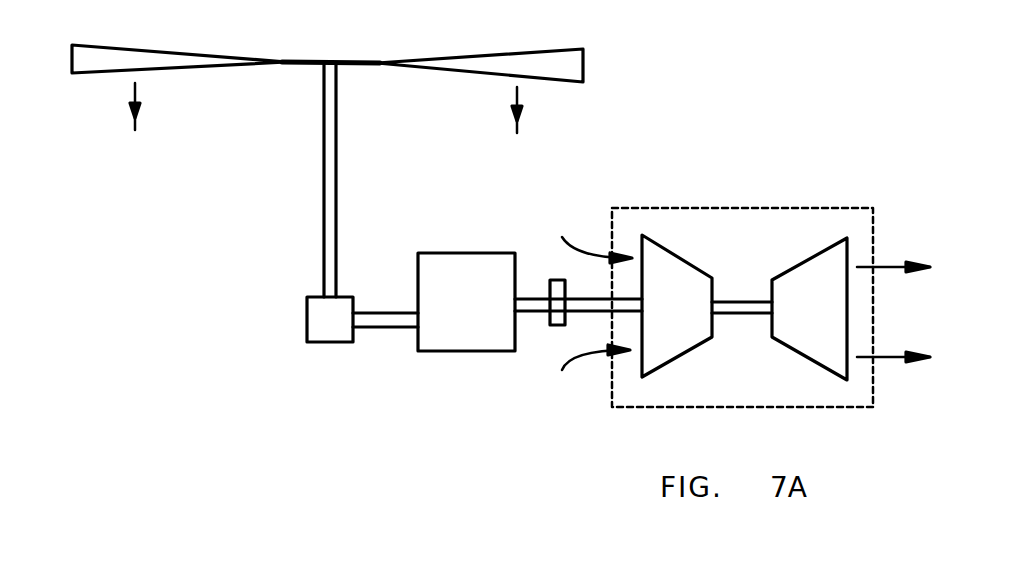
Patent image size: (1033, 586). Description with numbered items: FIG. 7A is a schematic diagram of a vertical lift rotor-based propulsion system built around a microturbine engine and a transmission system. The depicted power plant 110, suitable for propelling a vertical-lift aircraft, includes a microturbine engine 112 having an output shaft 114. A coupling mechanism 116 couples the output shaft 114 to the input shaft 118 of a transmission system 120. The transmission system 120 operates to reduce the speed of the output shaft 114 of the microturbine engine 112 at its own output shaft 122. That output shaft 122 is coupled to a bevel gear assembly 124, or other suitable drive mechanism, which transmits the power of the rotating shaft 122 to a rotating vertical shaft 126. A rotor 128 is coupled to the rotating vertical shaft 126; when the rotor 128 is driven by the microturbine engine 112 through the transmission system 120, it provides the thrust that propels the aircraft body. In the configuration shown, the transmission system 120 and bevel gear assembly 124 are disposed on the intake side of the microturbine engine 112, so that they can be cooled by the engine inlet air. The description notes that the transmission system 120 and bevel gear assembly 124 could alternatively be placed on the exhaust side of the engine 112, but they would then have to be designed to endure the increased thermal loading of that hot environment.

The power plant 110 is at (697, 158).
The microturbine engine 112 is at (780, 210).
The output shaft 114 is at (603, 312).
The coupling mechanism 116 is at (552, 280).
The input shaft 118 is at (532, 312).
The transmission system 120 is at (443, 355).
The output shaft 122 is at (393, 328).
The bevel gear assembly 124 is at (317, 347).
The rotating vertical shaft 126 is at (340, 183).
The rotor 128 is at (226, 52).